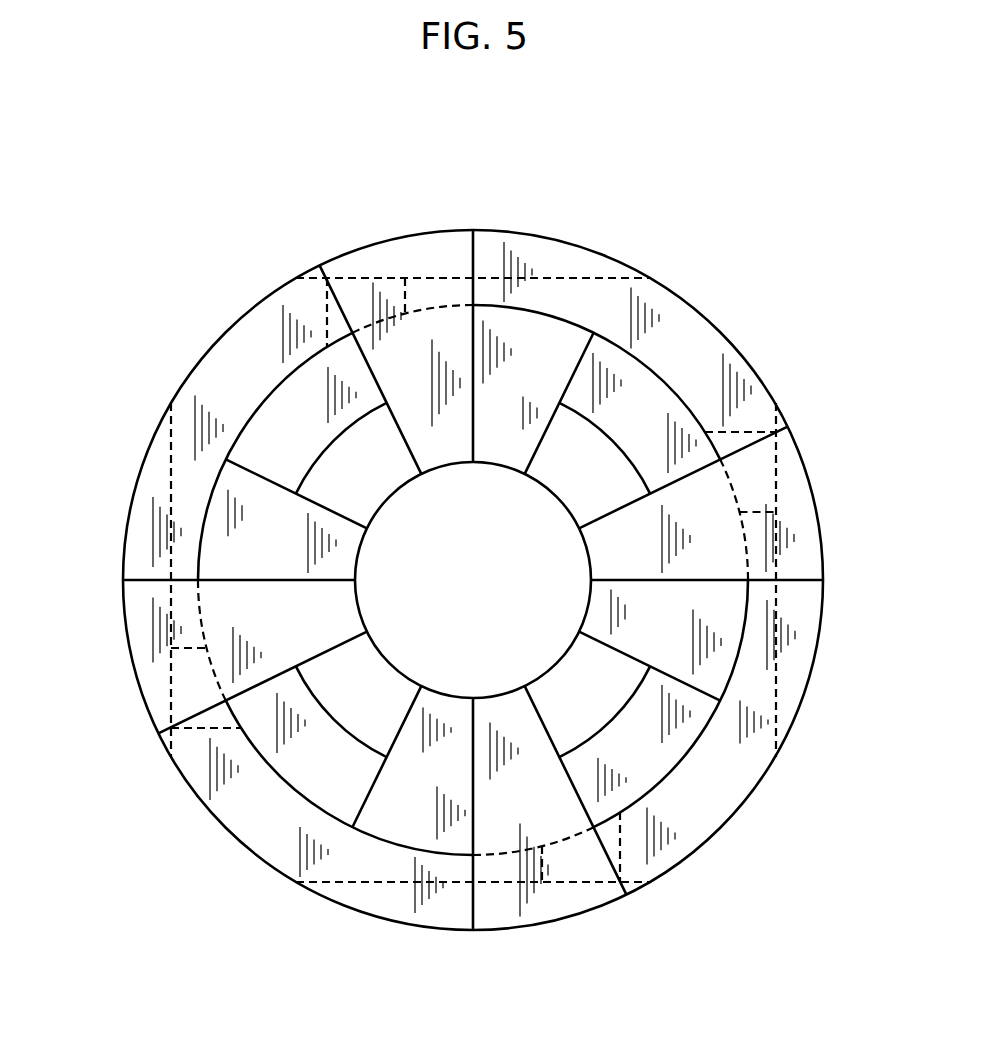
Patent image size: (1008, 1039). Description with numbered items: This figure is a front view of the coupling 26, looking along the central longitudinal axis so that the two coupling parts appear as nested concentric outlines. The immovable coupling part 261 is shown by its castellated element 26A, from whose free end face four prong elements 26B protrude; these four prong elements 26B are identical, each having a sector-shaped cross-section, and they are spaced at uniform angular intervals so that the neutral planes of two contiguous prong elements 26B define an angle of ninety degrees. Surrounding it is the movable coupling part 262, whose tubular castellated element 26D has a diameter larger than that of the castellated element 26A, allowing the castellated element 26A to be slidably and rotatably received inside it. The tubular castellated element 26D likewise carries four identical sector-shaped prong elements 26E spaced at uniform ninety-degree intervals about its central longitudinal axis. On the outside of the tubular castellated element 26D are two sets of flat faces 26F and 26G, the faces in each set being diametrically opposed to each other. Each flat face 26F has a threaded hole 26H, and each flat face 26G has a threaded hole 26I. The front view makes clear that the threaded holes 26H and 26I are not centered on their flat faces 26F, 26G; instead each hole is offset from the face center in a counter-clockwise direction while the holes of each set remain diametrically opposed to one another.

The coupling 26 is at (193, 302).
The immovable coupling part 261 is at (700, 737).
The movable coupling part 262 is at (735, 336).
The castellated element 26A is at (628, 407).
The prong elements 26B is at (258, 510).
The tubular castellated element 26D is at (667, 828).
The prong elements 26E is at (440, 450).
The flat faces 26F is at (778, 672).
The flat faces 26G is at (565, 278).
The threaded holes 26H is at (758, 473).
The threaded holes 26I is at (368, 300).